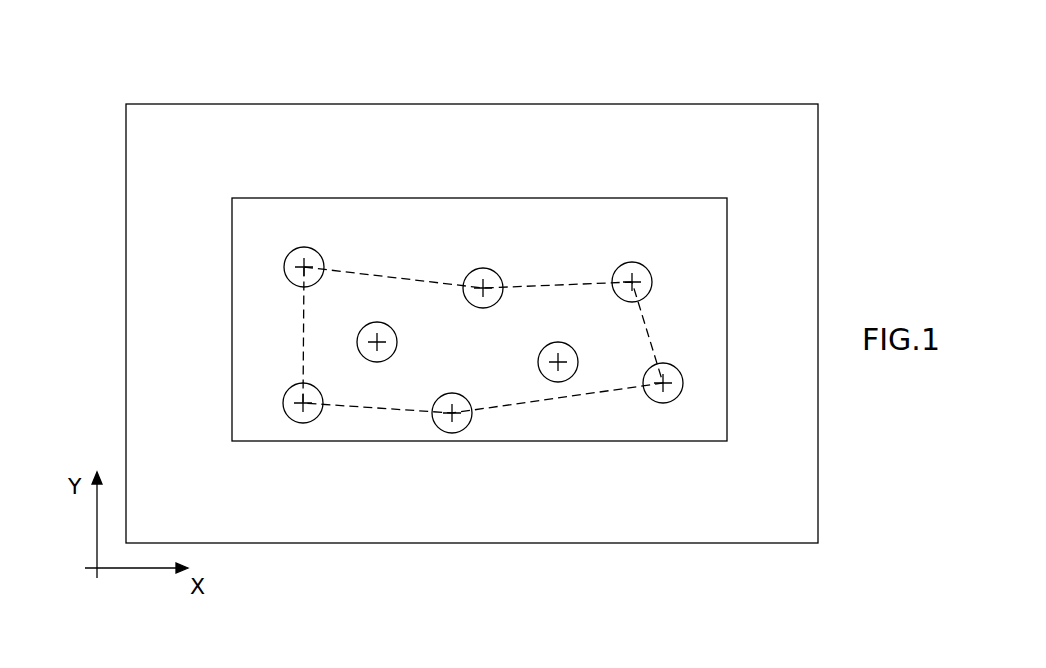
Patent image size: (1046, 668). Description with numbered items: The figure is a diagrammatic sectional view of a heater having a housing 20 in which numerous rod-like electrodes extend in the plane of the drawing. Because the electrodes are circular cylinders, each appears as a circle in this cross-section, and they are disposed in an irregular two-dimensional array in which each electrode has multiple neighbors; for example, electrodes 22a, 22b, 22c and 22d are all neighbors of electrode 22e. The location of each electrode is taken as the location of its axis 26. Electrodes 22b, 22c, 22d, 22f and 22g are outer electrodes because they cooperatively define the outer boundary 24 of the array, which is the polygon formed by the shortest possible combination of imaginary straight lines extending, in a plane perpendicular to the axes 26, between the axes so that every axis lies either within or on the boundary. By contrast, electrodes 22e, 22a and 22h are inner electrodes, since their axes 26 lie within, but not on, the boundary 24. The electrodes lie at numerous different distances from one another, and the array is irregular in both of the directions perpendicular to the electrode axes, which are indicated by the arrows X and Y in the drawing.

The housing 20 is at (101, 355).
The electrode 22a is at (480, 269).
The electrode 22b is at (631, 263).
The electrode 22c is at (665, 385).
The electrode 22d is at (467, 430).
The electrode 22e is at (563, 344).
The electrode 22f is at (293, 421).
The electrode 22g is at (285, 262).
The electrode 22h is at (363, 323).
The outer boundary 24 is at (298, 317).
The axis 26 is at (477, 294).